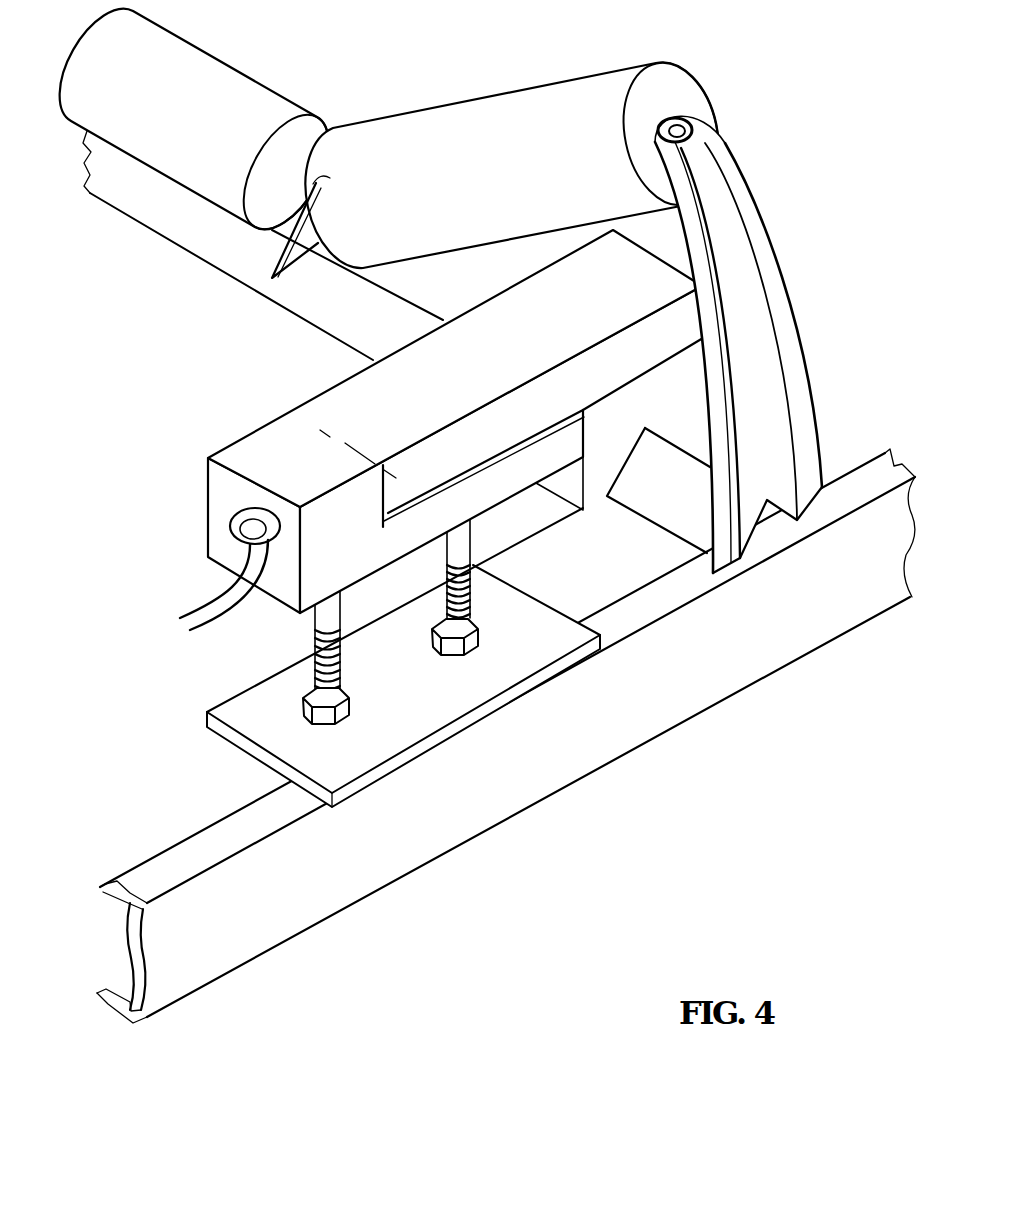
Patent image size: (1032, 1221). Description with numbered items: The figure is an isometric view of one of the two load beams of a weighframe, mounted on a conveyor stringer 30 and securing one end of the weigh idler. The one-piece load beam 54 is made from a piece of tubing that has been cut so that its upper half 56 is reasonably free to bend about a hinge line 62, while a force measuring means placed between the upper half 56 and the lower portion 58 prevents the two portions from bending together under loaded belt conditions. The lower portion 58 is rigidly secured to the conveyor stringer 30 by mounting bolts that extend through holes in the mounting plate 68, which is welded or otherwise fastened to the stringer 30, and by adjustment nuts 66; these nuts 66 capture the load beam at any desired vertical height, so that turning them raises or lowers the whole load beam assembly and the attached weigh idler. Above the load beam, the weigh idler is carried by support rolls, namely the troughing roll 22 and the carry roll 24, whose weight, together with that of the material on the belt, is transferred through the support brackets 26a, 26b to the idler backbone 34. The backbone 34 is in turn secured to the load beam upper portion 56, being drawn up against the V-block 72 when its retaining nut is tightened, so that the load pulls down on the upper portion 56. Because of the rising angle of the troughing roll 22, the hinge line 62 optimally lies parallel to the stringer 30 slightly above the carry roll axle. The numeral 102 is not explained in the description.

The troughing roll 22 is at (527, 182).
The carry roll 24 is at (185, 132).
The support bracket 26a is at (270, 253).
The support bracket 26b is at (770, 203).
The conveyor stringer 30 is at (253, 913).
The idler backbone 34 is at (370, 330).
The load beam 54 is at (373, 540).
The upper half of load beam 56 is at (580, 393).
The lower portion of load beam 58 is at (537, 477).
The hinge line 62 is at (303, 423).
The adjustment nuts 66 is at (345, 712).
The mounting plate 68 is at (492, 673).
The V-block 72 is at (600, 483).
The rail top surface 102 is at (185, 858).